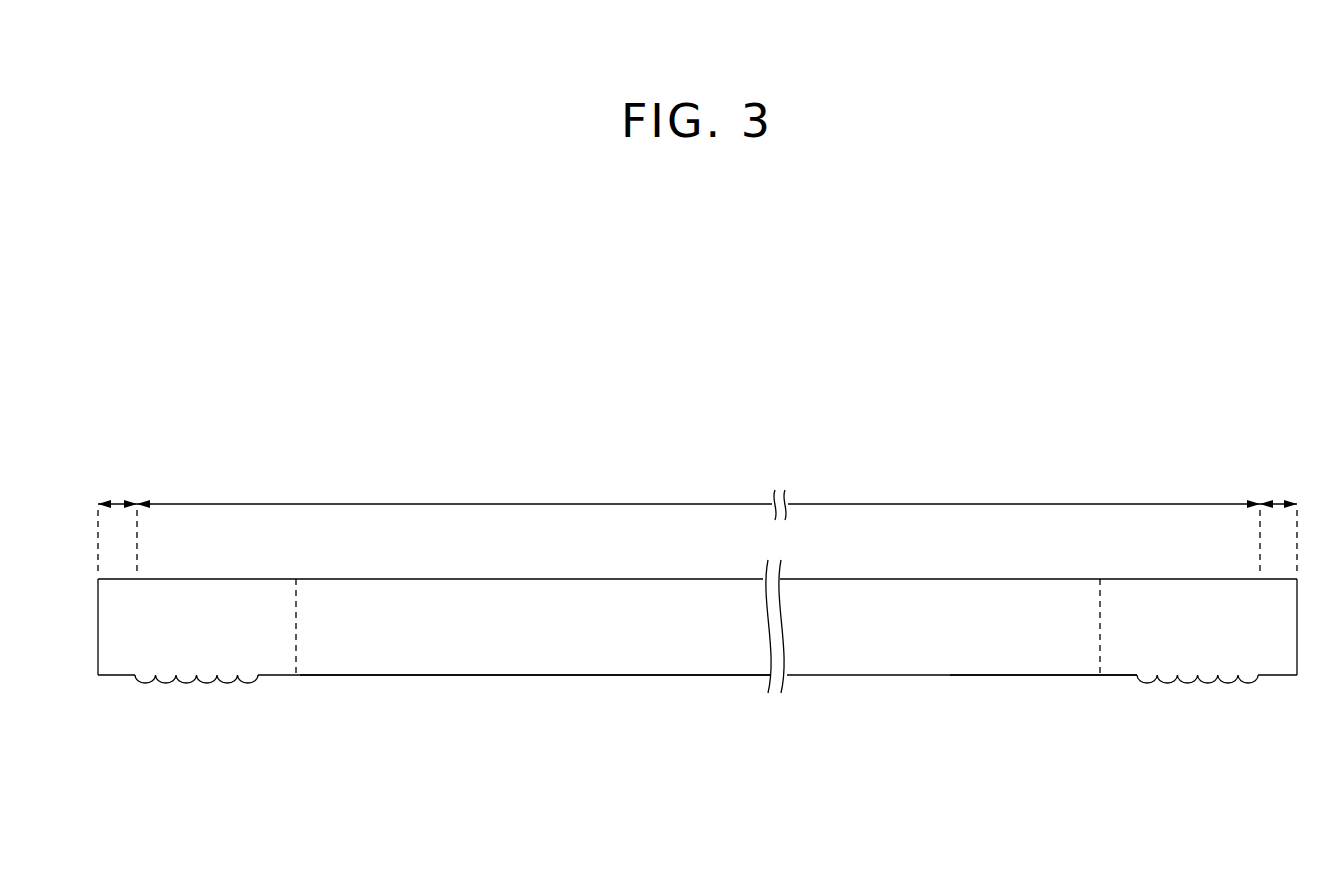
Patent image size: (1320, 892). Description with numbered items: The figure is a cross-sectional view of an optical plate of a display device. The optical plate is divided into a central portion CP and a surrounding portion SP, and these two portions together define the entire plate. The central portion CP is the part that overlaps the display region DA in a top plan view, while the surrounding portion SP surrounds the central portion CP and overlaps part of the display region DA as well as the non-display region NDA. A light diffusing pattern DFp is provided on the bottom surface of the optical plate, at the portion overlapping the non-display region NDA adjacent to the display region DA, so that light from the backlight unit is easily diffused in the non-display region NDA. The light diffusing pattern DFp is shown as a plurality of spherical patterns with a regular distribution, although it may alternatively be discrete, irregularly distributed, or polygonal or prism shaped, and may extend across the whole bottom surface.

The central portion CP is at (1037, 658).
The surrounding portion SP is at (1125, 658).
The light diffusing pattern DFp is at (1230, 683).
The non-display region NDA is at (698, 523).
The display region DA is at (698, 497).